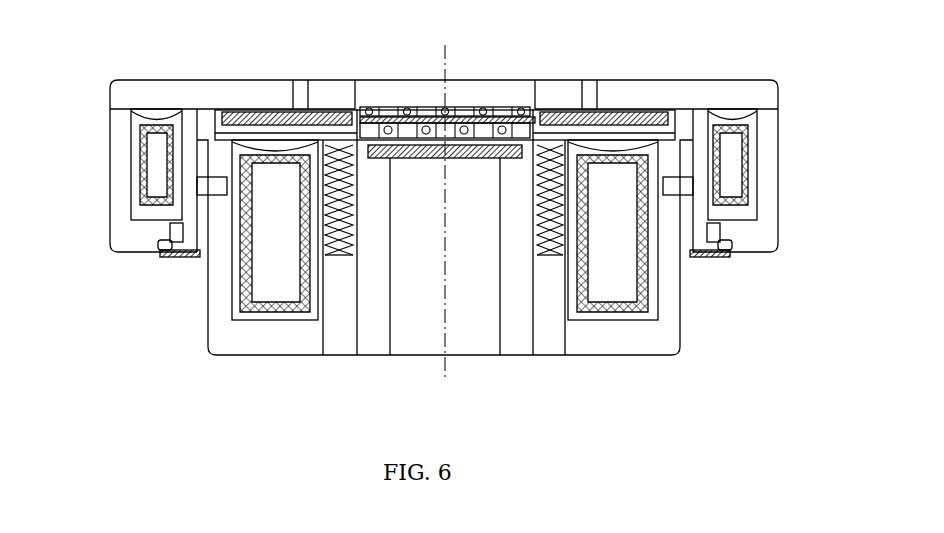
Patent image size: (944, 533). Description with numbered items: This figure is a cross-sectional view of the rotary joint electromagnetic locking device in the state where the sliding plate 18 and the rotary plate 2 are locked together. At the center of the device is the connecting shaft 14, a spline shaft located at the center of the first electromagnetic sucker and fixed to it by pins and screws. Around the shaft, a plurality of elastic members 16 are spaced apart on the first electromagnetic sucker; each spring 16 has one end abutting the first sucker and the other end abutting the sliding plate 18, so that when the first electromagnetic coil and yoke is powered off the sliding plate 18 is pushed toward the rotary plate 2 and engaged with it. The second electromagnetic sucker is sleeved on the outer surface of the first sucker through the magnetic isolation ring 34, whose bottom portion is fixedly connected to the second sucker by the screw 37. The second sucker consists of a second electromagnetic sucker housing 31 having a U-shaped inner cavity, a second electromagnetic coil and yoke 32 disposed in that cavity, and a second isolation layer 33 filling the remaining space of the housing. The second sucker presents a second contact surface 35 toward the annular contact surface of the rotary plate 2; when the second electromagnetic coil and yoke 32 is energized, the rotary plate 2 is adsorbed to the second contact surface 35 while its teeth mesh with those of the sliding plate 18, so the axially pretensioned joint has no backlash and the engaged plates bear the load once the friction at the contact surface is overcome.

The rotary plate 2 is at (655, 98).
The connecting shaft 14 is at (372, 112).
The elastic member 16 is at (552, 255).
The sliding plate 18 is at (222, 120).
The second electromagnetic sucker housing 31 is at (767, 132).
The second electromagnetic coil and yoke 32 is at (732, 168).
The second isolation layer 33 is at (758, 221).
The magnetic isolation ring 34 is at (205, 236).
The second contact surface 35 is at (110, 118).
The screw 37 is at (715, 257).